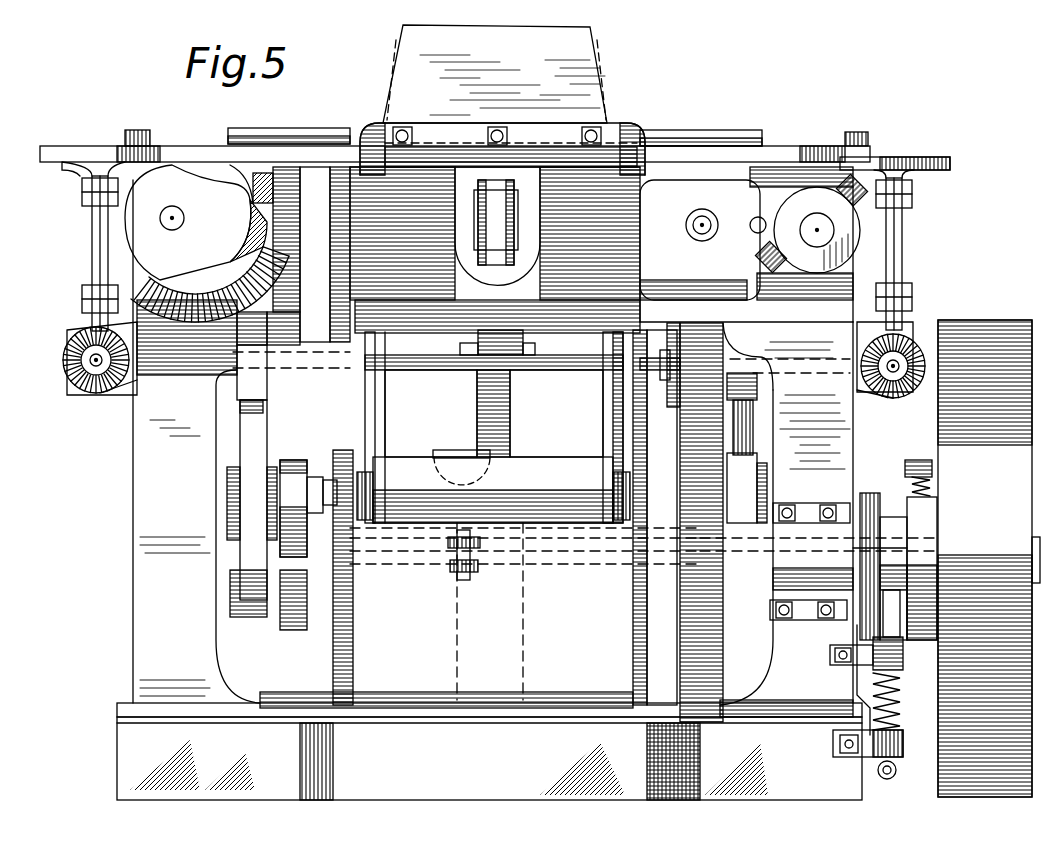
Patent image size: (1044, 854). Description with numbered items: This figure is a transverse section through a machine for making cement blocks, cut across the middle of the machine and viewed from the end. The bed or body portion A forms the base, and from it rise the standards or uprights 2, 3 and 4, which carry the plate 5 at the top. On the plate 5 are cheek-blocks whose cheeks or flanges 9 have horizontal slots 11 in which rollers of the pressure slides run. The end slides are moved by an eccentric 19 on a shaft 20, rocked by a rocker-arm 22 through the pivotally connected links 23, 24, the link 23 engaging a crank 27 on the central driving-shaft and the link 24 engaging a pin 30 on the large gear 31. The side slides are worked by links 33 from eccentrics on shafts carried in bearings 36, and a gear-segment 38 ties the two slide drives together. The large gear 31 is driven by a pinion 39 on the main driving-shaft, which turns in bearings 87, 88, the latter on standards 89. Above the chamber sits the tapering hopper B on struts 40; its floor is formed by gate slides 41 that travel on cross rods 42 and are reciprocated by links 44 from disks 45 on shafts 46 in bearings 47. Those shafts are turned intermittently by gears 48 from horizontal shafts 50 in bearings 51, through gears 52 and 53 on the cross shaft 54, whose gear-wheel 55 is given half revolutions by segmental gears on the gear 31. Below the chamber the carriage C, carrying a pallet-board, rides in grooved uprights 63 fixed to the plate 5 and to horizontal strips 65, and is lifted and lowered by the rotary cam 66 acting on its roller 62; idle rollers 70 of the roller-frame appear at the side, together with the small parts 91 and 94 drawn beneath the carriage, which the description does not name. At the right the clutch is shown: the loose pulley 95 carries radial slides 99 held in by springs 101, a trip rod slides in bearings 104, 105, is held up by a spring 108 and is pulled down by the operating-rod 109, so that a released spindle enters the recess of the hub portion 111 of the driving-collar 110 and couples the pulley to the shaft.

The bed or body portion A is at (147, 717).
The hopper B is at (590, 70).
The vertically-reciprocating carriage C is at (470, 343).
The standard or upright 2 is at (350, 650).
The standard or upright 3 is at (160, 480).
The standard or upright 4 is at (853, 462).
The plate 5 is at (718, 330).
The cheek or flange 9 is at (733, 203).
The horizontally-arranged slot 11 is at (715, 240).
The crank or eccentric 19 is at (507, 263).
The shaft 20 is at (537, 243).
The rocker-arm 22 is at (365, 373).
The link 23 is at (253, 433).
The link 24 is at (757, 410).
The crank 27 is at (290, 607).
The pin 30 is at (227, 510).
The gear 31 is at (683, 442).
The link 33 is at (180, 220).
The bearing 36 is at (785, 268).
The gear-segment 38 is at (340, 262).
The pinion 39 is at (563, 507).
The strut or arm 40 is at (423, 130).
The slide 41 is at (407, 153).
The rod 42 is at (291, 129).
The link or rod 44 is at (173, 147).
The disk 45 is at (67, 150).
The shaft 46 is at (100, 250).
The bearing 47 is at (110, 190).
The gear 48 is at (70, 327).
The horizontally-arranged shaft 50 is at (73, 367).
The bearing 51 is at (187, 323).
The gear 52 is at (97, 367).
The gear 53 is at (120, 383).
The shaft 54 is at (450, 372).
The gear-wheel 55 is at (670, 400).
The roller 62 is at (493, 347).
The vertical upright 63 is at (373, 437).
The horizontal strip 65 is at (623, 447).
The rotary cam 66 is at (500, 427).
The idle roller 70 is at (563, 530).
The bearing 87 is at (783, 530).
The bearing 88 is at (633, 590).
The standard 89 is at (340, 680).
The shaft 91 is at (490, 570).
The plate 94 is at (450, 450).
The loose pulley 95 is at (1000, 337).
The slide 99 is at (920, 520).
The spring 101 is at (913, 483).
The bearing 104 is at (873, 653).
The bearing 105 is at (873, 743).
The spring 108 is at (873, 697).
The operating-rod 109 is at (887, 779).
The driving-collar 110 is at (867, 550).
The hub portion 111 is at (907, 543).